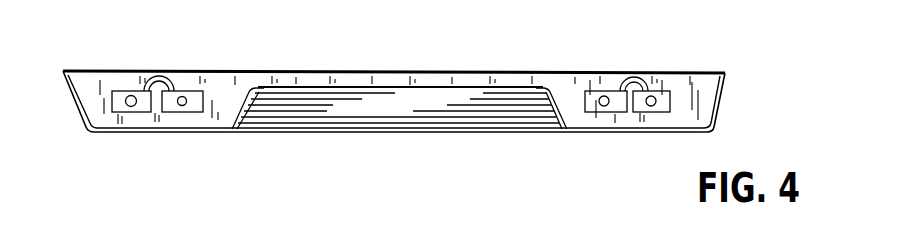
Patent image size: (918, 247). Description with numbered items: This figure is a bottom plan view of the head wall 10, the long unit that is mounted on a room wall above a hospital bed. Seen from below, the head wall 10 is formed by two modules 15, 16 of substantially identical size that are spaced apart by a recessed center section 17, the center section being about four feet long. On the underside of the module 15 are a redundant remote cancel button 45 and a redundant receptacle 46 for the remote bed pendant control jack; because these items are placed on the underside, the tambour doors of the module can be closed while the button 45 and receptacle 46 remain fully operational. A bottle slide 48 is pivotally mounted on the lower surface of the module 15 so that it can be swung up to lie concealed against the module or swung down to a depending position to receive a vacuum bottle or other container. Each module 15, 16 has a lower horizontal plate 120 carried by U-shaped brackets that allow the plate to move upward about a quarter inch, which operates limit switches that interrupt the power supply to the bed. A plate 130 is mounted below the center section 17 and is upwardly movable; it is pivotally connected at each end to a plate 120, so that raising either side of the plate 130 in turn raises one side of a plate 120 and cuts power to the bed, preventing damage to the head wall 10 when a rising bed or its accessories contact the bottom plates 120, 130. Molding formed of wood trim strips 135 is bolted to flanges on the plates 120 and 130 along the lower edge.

The head wall 10 is at (727, 55).
The module 15 is at (143, 145).
The module 16 is at (637, 143).
The recessed center section 17 is at (362, 140).
The redundant remote cancel button 45 is at (132, 95).
The redundant receptacle 46 is at (182, 96).
The bottle slide 48 is at (158, 75).
The lower horizontal plate 120 is at (217, 82).
The plate 130 is at (391, 82).
The wood trim strips 135 is at (230, 134).